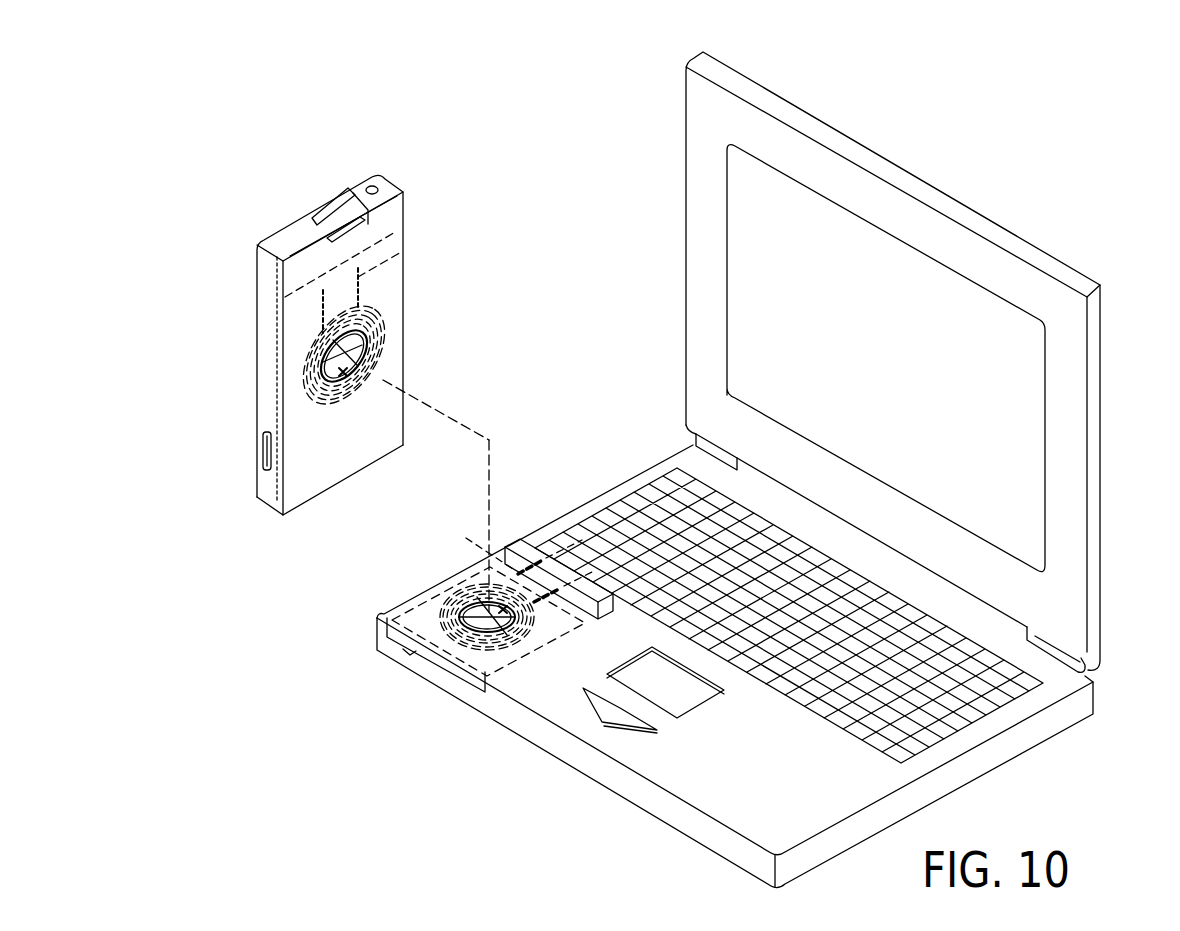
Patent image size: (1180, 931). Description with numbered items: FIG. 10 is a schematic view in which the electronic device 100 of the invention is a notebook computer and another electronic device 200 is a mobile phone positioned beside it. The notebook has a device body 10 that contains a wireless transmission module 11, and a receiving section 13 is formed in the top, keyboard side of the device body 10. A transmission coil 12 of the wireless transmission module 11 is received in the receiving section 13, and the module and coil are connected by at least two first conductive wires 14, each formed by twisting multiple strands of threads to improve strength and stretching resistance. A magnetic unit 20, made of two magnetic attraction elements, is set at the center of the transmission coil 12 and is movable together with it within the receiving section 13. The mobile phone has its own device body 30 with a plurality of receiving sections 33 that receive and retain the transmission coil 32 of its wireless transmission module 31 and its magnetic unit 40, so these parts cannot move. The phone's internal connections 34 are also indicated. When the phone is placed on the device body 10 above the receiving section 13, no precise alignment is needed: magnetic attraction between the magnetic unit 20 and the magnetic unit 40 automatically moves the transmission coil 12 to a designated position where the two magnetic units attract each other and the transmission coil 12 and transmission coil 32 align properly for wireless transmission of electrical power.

The device body 10 is at (1053, 736).
The wireless transmission module 11 is at (546, 522).
The transmission coil 12 is at (397, 601).
The receiving section 13 is at (395, 659).
The first conductive wires 14 is at (466, 538).
The magnetic unit 20 is at (446, 672).
The electronic device 100 is at (677, 163).
The another electronic device 200 is at (372, 168).
The device body 30 is at (252, 446).
The wireless transmission module 31 is at (341, 195).
The transmission coil 32 is at (381, 315).
The receiving sections 33 is at (322, 361).
The terminals 34 is at (380, 262).
The magnetic unit 40 is at (325, 380).